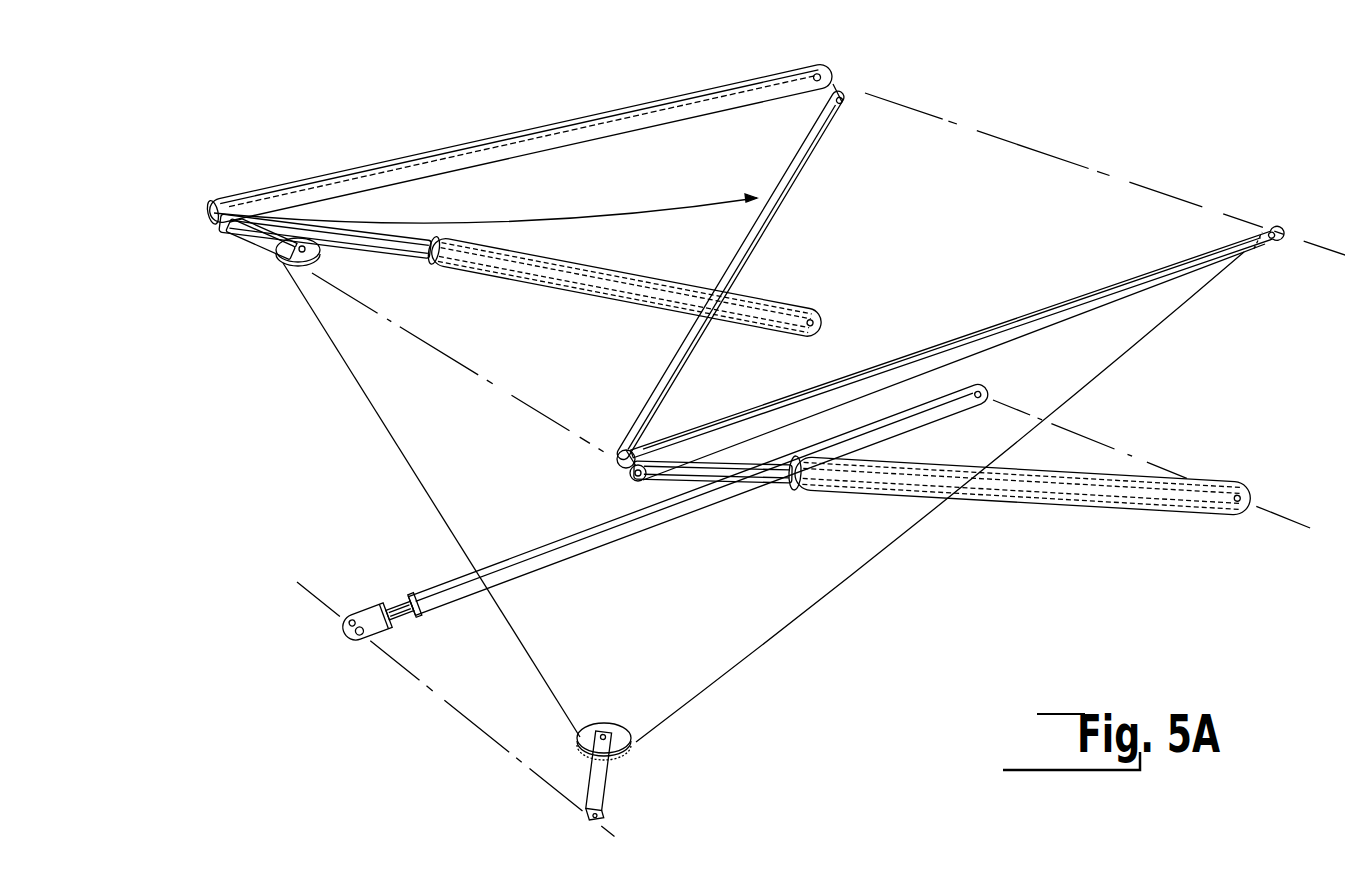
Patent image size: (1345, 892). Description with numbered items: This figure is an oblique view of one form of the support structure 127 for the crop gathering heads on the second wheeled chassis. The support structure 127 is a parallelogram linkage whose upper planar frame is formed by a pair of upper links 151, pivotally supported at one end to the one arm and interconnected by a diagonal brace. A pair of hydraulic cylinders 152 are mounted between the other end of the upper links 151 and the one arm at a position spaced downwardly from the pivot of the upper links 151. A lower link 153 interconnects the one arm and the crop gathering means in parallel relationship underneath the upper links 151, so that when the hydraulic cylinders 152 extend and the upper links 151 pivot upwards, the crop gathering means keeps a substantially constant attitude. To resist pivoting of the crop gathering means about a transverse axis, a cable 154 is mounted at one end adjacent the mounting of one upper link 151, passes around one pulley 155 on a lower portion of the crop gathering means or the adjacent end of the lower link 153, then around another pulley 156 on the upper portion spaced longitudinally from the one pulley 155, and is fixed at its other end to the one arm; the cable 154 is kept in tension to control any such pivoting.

The support structure 127 is at (453, 130).
The upper links 151 is at (606, 110).
The hydraulic cylinders 152 is at (582, 288).
The lower link 153 is at (626, 537).
The cable 154 is at (846, 575).
The one pulley 155 is at (620, 722).
The another pulley 156 is at (317, 258).